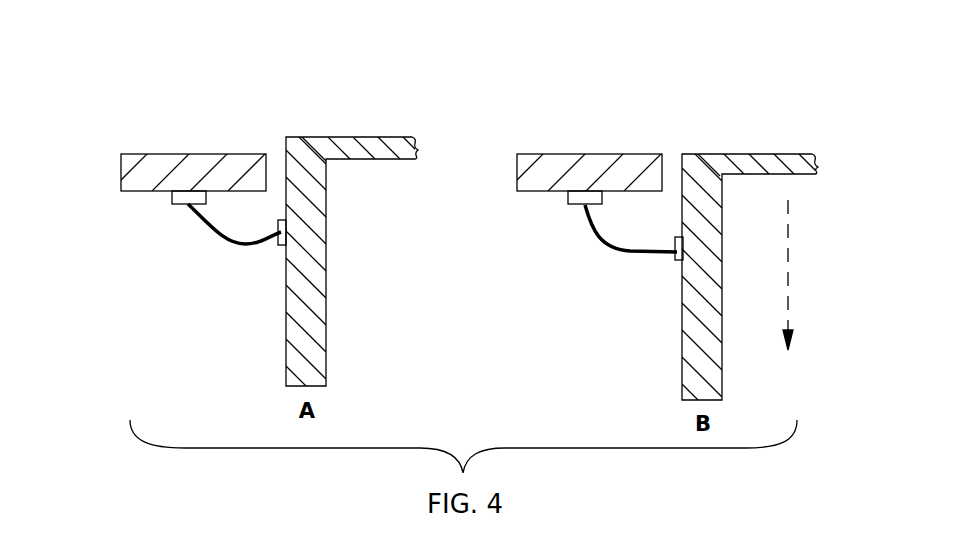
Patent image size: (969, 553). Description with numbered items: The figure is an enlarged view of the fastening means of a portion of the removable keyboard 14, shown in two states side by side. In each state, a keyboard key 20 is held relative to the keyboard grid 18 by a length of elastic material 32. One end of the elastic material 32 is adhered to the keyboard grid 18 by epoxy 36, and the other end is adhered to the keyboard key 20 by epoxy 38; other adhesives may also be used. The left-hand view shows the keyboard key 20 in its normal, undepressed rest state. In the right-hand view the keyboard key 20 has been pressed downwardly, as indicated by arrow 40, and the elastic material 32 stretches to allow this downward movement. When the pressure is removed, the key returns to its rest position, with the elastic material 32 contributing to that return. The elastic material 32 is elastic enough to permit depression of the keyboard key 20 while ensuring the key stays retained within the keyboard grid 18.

The removable keyboard 14 is at (152, 140).
The keyboard grid 18 is at (188, 166).
The keyboard key 20 is at (321, 150).
The elastic material 32 is at (207, 230).
The epoxy 36 is at (181, 199).
The epoxy 38 is at (280, 240).
The arrow 40 is at (789, 265).